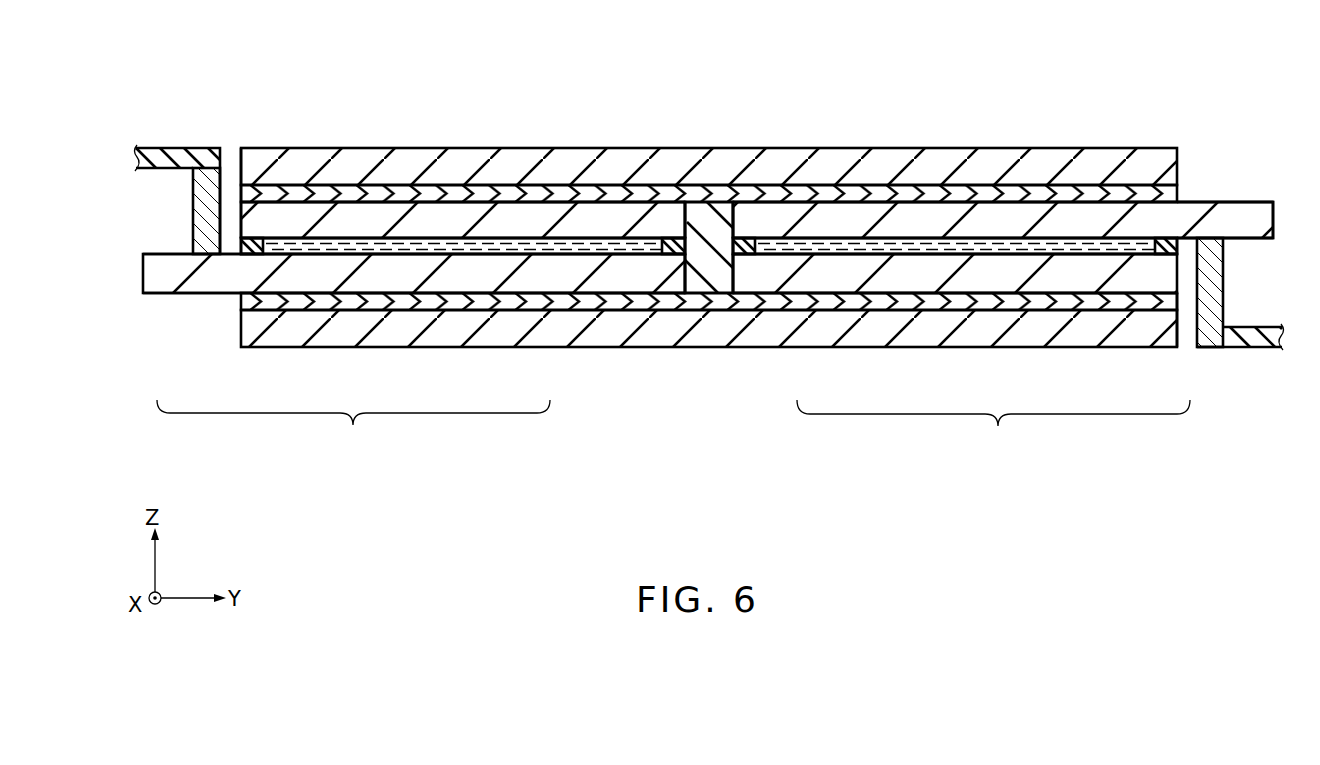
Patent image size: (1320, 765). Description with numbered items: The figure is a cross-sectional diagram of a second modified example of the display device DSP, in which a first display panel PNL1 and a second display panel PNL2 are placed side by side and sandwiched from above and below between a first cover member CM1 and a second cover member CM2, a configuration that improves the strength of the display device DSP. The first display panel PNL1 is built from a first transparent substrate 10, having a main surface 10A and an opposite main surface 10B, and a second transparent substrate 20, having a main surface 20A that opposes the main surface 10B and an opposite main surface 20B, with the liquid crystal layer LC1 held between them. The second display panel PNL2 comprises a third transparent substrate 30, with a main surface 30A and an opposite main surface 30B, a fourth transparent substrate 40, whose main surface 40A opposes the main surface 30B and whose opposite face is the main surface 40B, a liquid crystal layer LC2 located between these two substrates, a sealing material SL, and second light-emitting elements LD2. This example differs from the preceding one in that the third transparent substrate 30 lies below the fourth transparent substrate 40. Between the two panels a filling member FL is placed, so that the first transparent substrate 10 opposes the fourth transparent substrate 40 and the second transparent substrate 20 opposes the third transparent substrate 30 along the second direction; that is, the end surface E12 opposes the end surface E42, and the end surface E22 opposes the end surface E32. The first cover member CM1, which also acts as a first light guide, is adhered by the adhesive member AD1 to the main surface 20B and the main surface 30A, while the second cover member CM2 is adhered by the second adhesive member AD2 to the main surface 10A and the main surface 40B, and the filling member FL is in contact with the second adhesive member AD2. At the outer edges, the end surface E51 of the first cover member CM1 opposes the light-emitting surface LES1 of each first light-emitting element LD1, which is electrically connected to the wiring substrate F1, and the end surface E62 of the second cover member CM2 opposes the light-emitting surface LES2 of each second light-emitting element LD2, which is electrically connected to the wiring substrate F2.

The display device DSP is at (1058, 51).
The first display panel PNL1 is at (353, 429).
The second display panel PNL2 is at (993, 429).
The first transparent substrate 10 is at (203, 272).
The main surface 10A is at (560, 243).
The main surface 10B is at (577, 240).
The second transparent substrate 20 is at (380, 220).
The main surface 20A is at (617, 243).
The main surface 20B is at (543, 200).
The third transparent substrate 30 is at (967, 220).
The main surface 30A is at (1033, 205).
The main surface 30B is at (987, 240).
The fourth transparent substrate 40 is at (1127, 273).
The main surface 40A is at (893, 257).
The main surface 40B is at (860, 296).
The liquid crystal layer LC1 is at (525, 250).
The liquid crystal layer LC2 is at (835, 249).
The sealing material SL is at (673, 240).
The filling member FL is at (712, 285).
The adhesive member AD1 is at (507, 192).
The second adhesive member AD2 is at (758, 302).
The first cover member CM1 is at (398, 165).
The second cover member CM2 is at (643, 330).
The end surface E12 is at (697, 272).
The end surface E22 is at (693, 218).
The end surface E32 is at (722, 218).
The end surface E42 is at (722, 272).
The end surface E51 is at (242, 160).
The end surface E62 is at (1177, 323).
The wiring substrate F1 is at (172, 160).
The wiring substrate F2 is at (1250, 337).
The first light-emitting element LD1 is at (210, 180).
The second light-emitting element LD2 is at (1208, 318).
The light-emitting surface LES1 is at (222, 213).
The light-emitting surface LES2 is at (1188, 240).